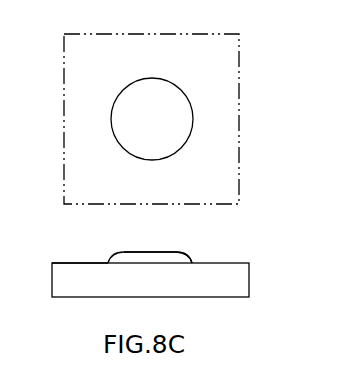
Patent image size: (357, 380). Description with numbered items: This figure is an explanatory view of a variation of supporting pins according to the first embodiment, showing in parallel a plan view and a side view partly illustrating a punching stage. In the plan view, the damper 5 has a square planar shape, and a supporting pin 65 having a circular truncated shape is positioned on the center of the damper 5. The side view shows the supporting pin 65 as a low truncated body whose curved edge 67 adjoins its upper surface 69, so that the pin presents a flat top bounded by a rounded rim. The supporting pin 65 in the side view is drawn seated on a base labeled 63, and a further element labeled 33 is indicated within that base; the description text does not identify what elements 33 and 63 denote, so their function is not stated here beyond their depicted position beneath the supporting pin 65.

The damper 5 is at (240, 111).
The substrate layer 33 is at (65, 273).
The substrate 63 is at (240, 263).
The supporting pin 65 is at (172, 87).
The curved edge 67 is at (192, 262).
The upper surface 69 is at (148, 252).